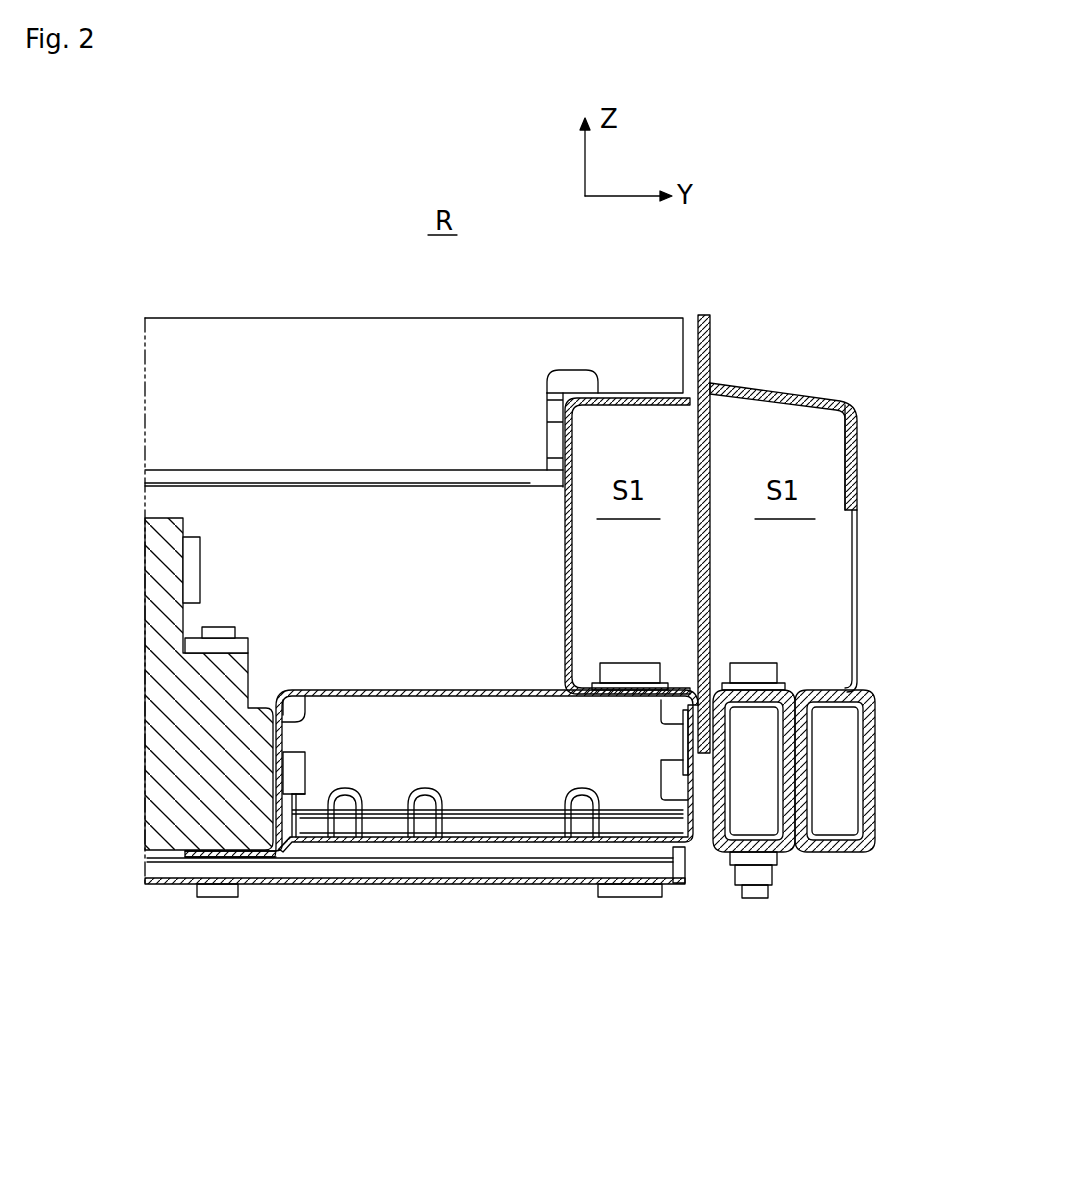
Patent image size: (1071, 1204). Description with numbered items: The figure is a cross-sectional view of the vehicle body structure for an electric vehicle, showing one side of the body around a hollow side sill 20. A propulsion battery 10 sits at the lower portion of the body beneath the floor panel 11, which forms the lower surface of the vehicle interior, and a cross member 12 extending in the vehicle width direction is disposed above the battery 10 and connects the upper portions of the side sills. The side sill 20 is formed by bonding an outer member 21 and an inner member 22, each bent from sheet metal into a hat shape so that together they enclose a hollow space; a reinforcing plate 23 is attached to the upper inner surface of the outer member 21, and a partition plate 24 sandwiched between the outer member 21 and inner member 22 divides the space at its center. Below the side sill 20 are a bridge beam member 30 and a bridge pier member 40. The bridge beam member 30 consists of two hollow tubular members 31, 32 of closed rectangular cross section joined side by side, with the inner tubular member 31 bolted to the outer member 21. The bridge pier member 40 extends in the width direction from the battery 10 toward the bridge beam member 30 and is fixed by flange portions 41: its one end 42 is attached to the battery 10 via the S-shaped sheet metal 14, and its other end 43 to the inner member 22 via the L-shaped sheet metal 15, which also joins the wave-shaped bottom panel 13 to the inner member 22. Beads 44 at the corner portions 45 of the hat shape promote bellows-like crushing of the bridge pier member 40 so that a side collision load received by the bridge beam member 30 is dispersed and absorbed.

The battery 10 is at (153, 873).
The floor panel 11 is at (192, 485).
The cross member 12 is at (328, 318).
The bottom panel 13 is at (370, 884).
The S-shaped sheet metal 14 is at (357, 690).
The L-shaped sheet metal 15 is at (690, 840).
The side sill 20 is at (795, 365).
The outer member 21 is at (855, 405).
The inner member 22 is at (565, 558).
The reinforcing plate 23 is at (845, 433).
The partition plate 24 is at (705, 606).
The bridge beam member 30 is at (816, 856).
The tubular member 31 is at (790, 852).
The tubular member 32 is at (870, 852).
The bridge pier member 40 is at (477, 787).
The flange portion 41 is at (241, 858).
The one end 42 is at (303, 842).
The other end 43 is at (668, 827).
The bead 44 is at (425, 842).
The corner portion 45 is at (500, 842).